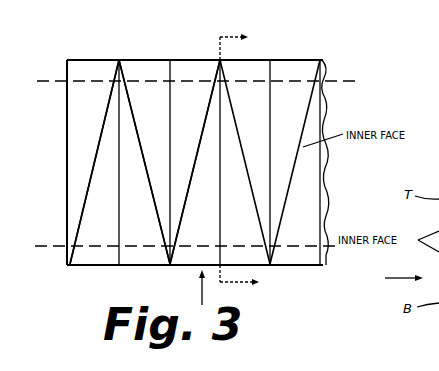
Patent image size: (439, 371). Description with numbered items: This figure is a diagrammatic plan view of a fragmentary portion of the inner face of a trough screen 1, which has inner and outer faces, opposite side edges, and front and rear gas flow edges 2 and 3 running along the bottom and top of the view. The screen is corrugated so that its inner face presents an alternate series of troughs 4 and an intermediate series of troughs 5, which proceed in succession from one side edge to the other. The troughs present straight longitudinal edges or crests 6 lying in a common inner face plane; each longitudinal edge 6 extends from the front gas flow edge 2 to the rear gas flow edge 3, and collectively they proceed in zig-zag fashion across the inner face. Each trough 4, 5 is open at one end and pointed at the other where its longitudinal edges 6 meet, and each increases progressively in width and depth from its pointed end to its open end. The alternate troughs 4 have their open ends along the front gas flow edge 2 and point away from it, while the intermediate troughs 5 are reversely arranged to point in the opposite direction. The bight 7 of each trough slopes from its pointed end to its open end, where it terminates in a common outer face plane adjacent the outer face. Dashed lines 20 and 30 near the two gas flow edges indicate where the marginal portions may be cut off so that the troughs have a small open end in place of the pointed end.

The trough screen 1 is at (67, 131).
The front gas flow edge 2 is at (190, 265).
The rear gas flow edge 3 is at (138, 59).
The alternate trough 4 is at (155, 162).
The intermediate trough 5 is at (194, 161).
The longitudinal edge 6 is at (96, 146).
The bight 7 is at (120, 181).
The lower fold line 20 is at (55, 246).
The dotted line 30 is at (59, 81).